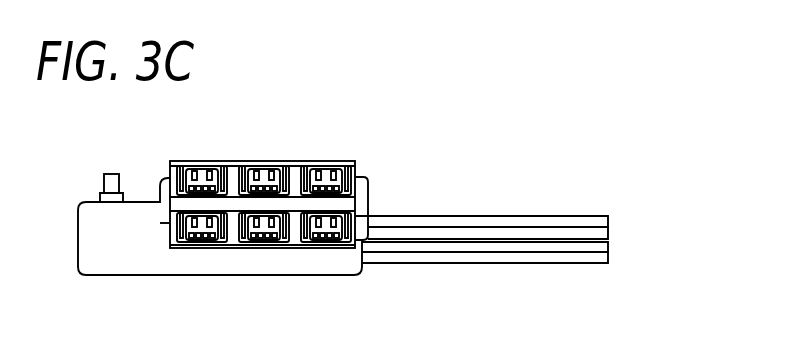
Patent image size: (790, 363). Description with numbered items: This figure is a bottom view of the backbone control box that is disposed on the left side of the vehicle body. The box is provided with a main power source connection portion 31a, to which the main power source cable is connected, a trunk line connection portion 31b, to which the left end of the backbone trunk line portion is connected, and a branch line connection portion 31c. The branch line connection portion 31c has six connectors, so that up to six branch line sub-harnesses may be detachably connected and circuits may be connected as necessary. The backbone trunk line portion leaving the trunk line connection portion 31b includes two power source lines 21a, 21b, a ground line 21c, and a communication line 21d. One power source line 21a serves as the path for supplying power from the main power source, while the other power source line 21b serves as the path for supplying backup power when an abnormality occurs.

The main power source connection portion 31a is at (90, 192).
The trunk line connection portion 31b is at (375, 200).
The branch line connection portion 31c is at (288, 258).
The power source line 21a is at (428, 258).
The power source line 21b is at (488, 247).
The ground line 21c is at (513, 233).
The communication line 21d is at (568, 223).